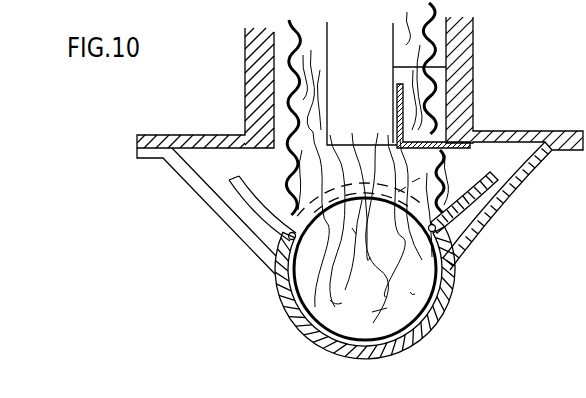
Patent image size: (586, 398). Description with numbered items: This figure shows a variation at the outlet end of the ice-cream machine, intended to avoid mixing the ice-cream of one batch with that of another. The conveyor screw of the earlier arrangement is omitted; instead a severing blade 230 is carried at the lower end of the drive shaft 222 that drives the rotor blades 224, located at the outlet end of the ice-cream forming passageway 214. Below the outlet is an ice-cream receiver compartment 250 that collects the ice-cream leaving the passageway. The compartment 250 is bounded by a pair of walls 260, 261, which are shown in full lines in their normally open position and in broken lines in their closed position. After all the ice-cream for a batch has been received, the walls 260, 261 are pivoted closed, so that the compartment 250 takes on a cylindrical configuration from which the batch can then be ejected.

The ice-cream forming passageway 214 is at (440, 50).
The drive shaft 222 is at (443, 63).
The rotor blades 224 is at (448, 97).
The severing blade 230 is at (447, 138).
The ice-cream receiver compartment 250 is at (425, 276).
The wall 260 is at (231, 240).
The wall 261 is at (444, 169).